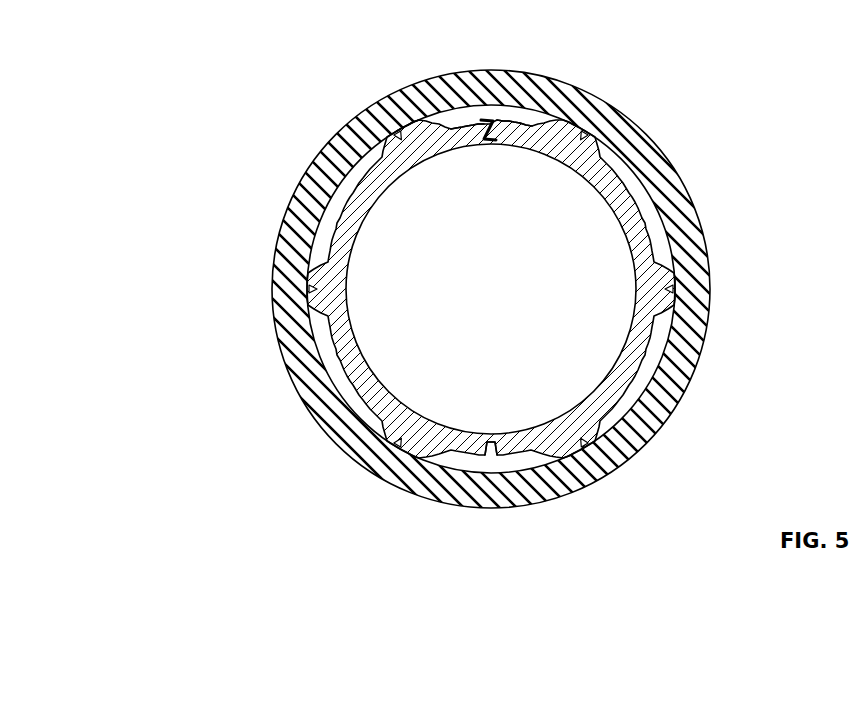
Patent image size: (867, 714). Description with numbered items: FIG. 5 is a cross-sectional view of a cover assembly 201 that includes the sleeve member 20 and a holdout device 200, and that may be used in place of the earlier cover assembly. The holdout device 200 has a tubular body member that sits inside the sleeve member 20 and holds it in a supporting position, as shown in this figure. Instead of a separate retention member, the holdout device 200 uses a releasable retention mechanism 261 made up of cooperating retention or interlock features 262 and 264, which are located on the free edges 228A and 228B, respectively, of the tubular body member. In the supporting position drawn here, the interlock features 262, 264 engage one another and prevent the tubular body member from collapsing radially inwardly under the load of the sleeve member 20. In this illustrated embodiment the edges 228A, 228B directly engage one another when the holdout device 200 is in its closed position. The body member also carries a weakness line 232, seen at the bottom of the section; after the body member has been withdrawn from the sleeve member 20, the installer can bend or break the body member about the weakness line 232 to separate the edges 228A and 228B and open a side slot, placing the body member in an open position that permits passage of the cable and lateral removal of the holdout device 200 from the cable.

The cover assembly 201 is at (252, 57).
The sleeve member 20 is at (292, 326).
The interlock feature 262 is at (493, 80).
The interlock feature 264 is at (468, 127).
The releasable retention mechanism 261 is at (490, 118).
The free edge 228A is at (477, 130).
The free edge 228B is at (494, 136).
The holdout device 200 is at (341, 367).
The weakness line 232 is at (492, 444).